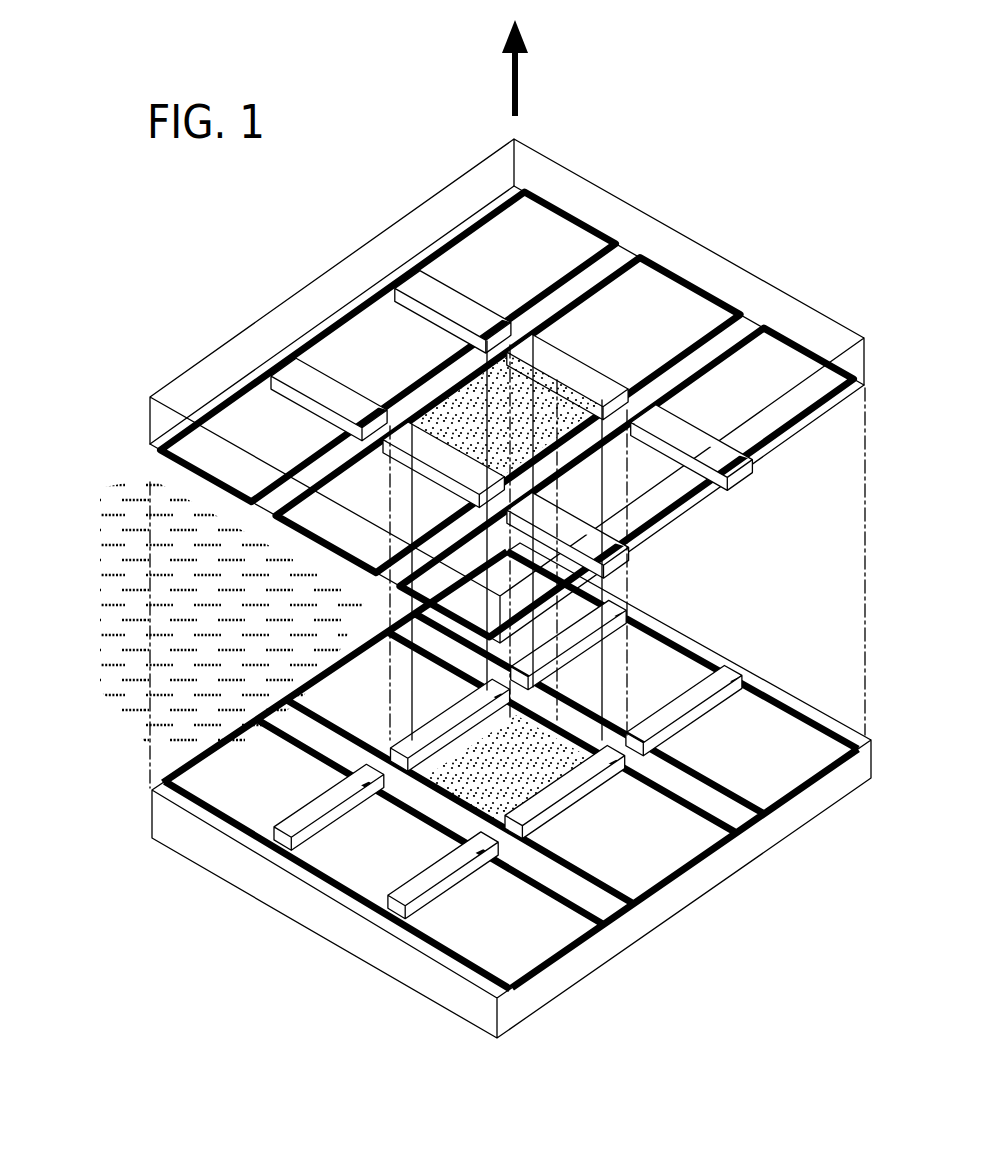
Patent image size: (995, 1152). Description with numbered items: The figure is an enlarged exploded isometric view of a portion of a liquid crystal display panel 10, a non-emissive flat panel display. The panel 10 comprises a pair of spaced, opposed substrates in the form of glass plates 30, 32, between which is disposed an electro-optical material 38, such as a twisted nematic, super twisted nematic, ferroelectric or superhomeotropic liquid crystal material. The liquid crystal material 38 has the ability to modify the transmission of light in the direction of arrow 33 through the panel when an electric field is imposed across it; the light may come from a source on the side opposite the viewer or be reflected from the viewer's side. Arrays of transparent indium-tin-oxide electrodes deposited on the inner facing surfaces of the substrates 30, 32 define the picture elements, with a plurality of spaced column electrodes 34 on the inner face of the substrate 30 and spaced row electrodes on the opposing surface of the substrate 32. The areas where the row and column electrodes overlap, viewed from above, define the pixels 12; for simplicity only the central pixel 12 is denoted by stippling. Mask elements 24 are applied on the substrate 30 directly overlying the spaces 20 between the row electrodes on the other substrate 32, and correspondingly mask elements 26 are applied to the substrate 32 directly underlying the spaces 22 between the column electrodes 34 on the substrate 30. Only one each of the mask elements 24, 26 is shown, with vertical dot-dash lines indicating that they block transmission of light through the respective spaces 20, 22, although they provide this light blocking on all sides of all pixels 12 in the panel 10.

The LCD panel 10 is at (116, 852).
The pixel 12 is at (480, 432).
The space between electrodes 36 20 is at (605, 893).
The space between electrodes 34 22 is at (738, 328).
The mask element 24 is at (579, 361).
The mask element 26 is at (452, 860).
The substrate 30 is at (235, 348).
The substrate 32 is at (275, 885).
The arrow 33 is at (522, 95).
The column electrodes 34 is at (765, 363).
The electro-optical material 38 is at (193, 633).